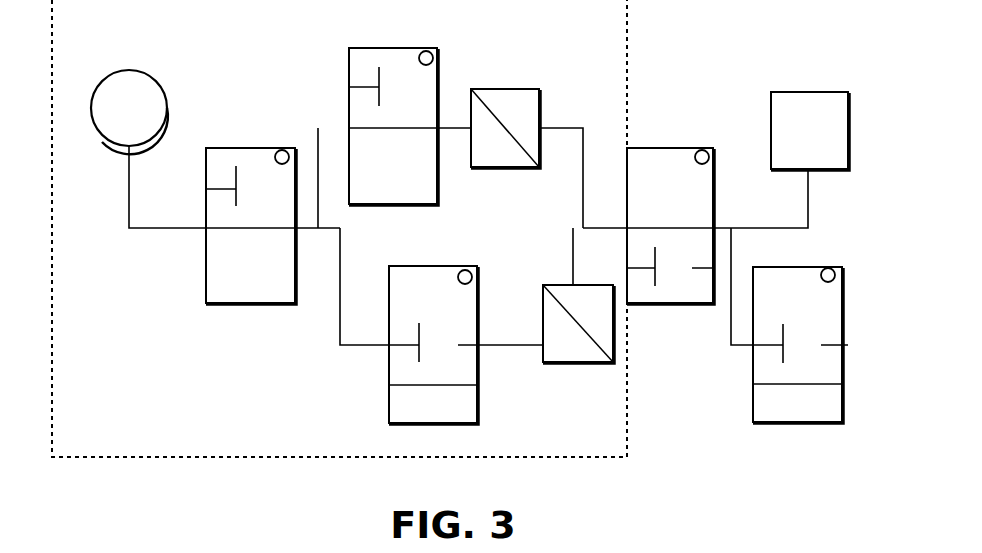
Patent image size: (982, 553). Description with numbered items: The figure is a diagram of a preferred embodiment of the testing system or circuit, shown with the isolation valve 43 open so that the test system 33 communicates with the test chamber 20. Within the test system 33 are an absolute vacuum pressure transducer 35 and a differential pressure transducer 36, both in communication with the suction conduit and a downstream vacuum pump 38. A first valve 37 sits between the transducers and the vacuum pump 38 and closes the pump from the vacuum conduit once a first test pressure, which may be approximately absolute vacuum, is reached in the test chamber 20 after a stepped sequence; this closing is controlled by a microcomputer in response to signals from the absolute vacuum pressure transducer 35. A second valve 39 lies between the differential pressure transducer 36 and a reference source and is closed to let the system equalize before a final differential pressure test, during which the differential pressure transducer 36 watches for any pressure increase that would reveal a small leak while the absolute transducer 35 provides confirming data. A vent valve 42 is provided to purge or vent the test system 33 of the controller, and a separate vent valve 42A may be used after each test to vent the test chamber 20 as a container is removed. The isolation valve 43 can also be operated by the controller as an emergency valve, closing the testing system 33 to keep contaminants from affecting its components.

The test chamber 20 is at (771, 110).
The test system 33 is at (636, 62).
The absolute vacuum pressure transducer 35 is at (543, 287).
The differential pressure transducer 36 is at (543, 112).
The first valve 37 is at (206, 267).
The vacuum pump 38 is at (160, 84).
The second valve 39 is at (349, 78).
The vent valve 42 is at (389, 372).
The separate vent valve 42A is at (753, 373).
The isolation valve 43 is at (713, 210).